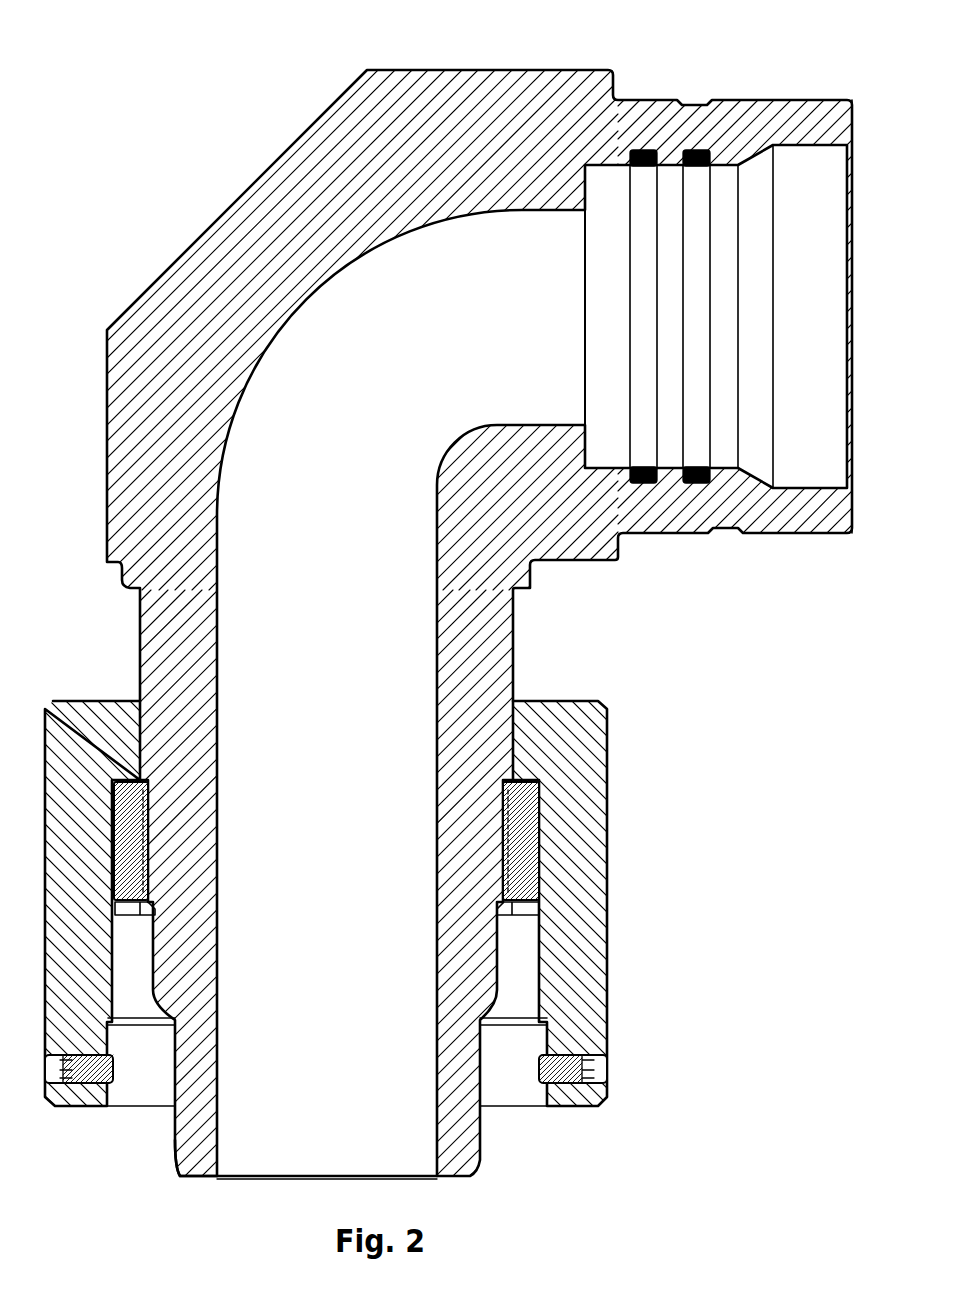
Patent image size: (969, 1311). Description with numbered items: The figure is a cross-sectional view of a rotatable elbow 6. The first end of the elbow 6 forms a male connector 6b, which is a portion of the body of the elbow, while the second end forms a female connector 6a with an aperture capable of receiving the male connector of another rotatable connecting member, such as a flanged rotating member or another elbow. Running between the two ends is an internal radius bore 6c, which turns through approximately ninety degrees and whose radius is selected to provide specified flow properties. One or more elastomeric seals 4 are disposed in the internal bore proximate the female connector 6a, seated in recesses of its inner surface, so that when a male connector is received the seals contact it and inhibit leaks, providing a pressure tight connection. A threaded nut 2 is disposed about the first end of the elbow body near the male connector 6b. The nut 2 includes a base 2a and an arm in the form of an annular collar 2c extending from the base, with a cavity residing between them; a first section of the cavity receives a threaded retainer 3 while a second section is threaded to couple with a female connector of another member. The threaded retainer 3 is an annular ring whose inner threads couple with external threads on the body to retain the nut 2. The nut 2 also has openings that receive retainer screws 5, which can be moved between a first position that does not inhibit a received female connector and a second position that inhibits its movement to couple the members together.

The threaded nut 2 is at (583, 738).
The base 2a is at (558, 714).
The annular collar 2c is at (619, 923).
The threaded retainer 3 is at (517, 847).
The elastomeric seals 4 is at (647, 150).
The retainer screws 5 is at (93, 1073).
The elbow 6 is at (258, 215).
The female connector 6a is at (723, 318).
The male connector 6b is at (170, 1148).
The internal radius bore 6c is at (532, 662).